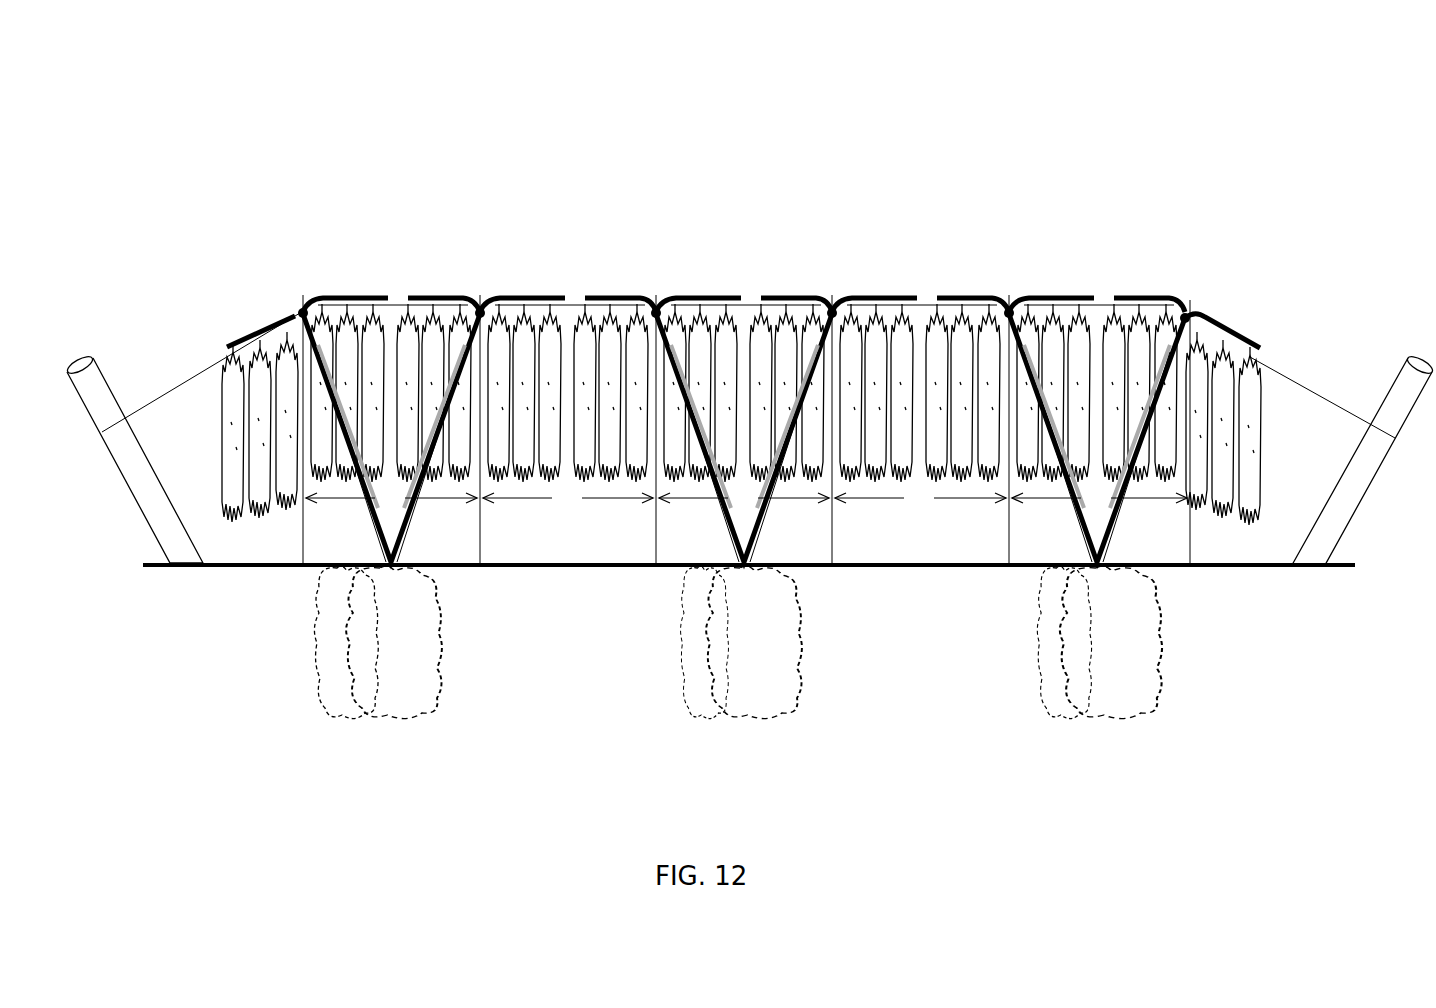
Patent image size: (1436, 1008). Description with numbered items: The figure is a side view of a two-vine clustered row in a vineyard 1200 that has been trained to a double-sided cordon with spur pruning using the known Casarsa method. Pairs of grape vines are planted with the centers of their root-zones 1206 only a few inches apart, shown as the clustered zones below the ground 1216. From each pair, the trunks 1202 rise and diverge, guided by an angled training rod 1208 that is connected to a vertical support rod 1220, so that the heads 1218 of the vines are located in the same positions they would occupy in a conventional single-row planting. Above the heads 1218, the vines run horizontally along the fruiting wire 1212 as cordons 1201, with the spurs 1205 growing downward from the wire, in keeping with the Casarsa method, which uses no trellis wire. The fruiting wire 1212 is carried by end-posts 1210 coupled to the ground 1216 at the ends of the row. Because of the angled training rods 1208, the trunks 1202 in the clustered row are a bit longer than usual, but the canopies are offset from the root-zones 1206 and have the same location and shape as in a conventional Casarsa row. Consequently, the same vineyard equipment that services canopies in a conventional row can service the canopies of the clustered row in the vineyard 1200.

The vineyard 1200 is at (773, 130).
The horizontal support rails 1201 is at (268, 307).
The trunks 1202 is at (377, 531).
The end rail segment 1205 is at (1258, 358).
The root-zones 1206 is at (367, 727).
The angled training rod 1208 is at (381, 553).
The end-posts 1210 is at (1396, 372).
The fruiting wire 1212 is at (200, 359).
The ground 1216 is at (1246, 576).
The heads 1218 is at (293, 306).
The vertical support rod 1220 is at (300, 553).